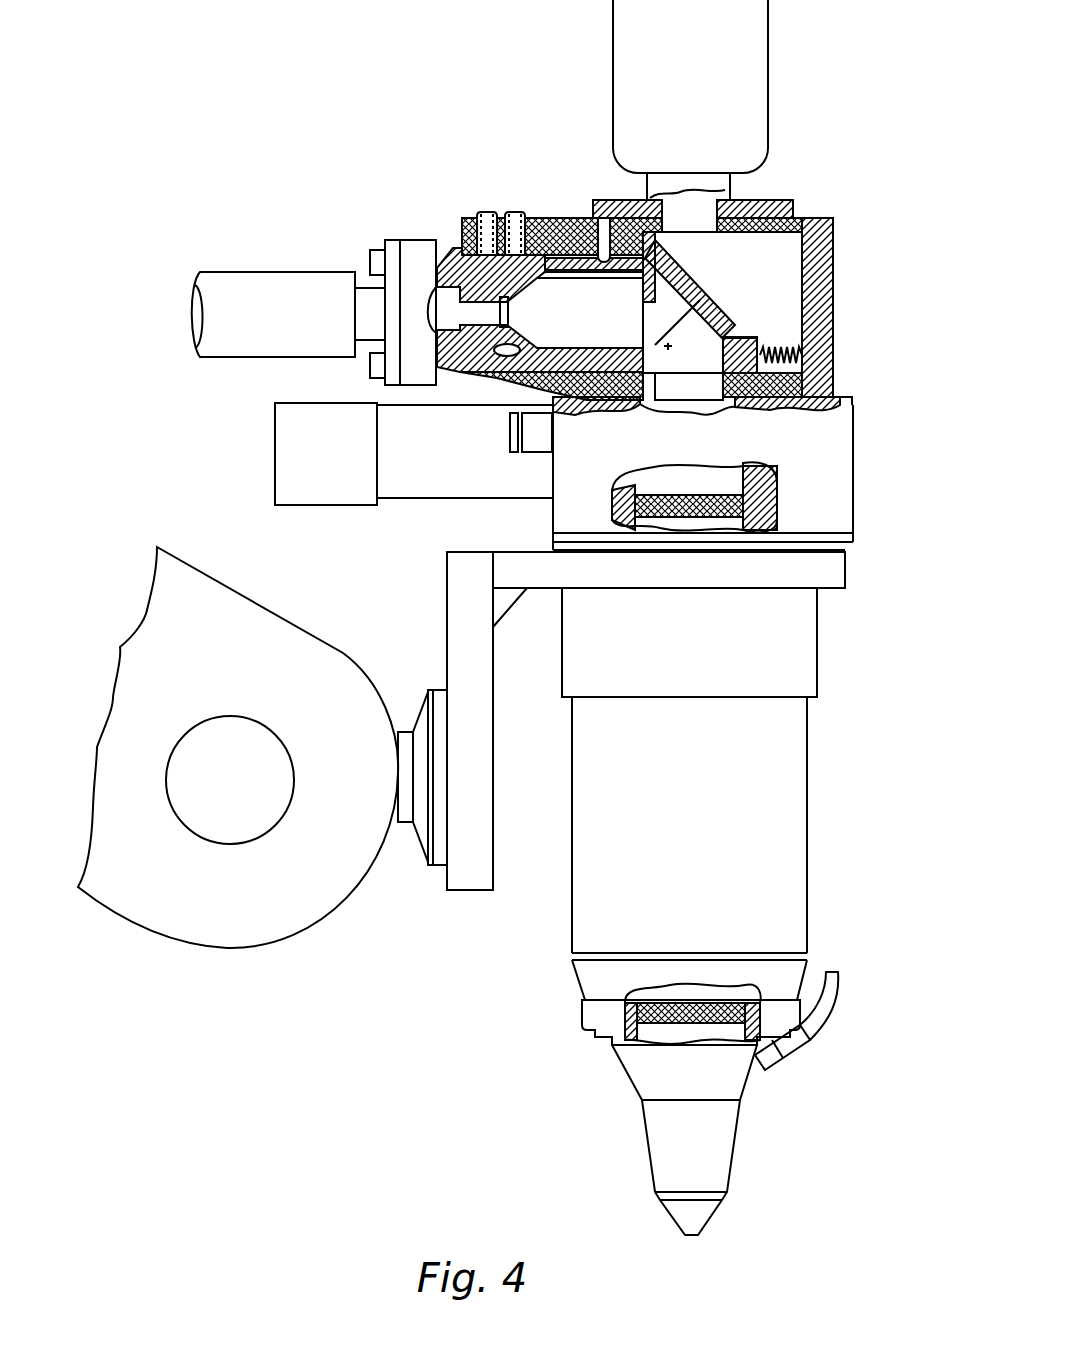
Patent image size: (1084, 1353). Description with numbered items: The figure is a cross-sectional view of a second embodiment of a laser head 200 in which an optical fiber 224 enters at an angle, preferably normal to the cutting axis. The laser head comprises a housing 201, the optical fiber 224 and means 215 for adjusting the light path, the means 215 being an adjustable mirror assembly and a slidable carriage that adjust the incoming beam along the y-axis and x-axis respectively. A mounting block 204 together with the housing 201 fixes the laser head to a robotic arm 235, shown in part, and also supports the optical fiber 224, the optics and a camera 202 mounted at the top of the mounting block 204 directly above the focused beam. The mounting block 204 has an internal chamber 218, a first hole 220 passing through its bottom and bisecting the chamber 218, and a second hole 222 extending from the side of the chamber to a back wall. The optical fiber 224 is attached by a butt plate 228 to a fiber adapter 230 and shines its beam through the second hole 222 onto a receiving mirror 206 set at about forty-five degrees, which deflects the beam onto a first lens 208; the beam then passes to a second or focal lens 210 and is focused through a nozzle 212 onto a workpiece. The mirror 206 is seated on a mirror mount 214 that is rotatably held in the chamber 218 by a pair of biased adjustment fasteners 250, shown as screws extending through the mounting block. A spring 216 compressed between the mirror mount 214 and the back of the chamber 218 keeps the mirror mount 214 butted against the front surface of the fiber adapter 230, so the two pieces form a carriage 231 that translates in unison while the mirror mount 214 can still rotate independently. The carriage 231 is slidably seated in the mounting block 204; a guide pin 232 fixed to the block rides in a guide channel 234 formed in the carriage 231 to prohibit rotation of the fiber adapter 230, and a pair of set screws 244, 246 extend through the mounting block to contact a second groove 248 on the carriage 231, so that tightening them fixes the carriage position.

The laser head 200 is at (342, 133).
The means for adjusting 215 is at (453, 113).
The camera 202 is at (600, 90).
The guide pin 232 is at (588, 216).
The second hole 222 is at (552, 218).
The set screw 246 is at (496, 214).
The set screw 244 is at (479, 213).
The second groove 248 is at (467, 232).
The butt plate 228 is at (395, 240).
The optical fiber 224 is at (360, 265).
The carriage 231 is at (700, 218).
The mounting block 204 is at (777, 257).
The internal chamber 218 is at (833, 240).
The receiving mirror 206 is at (742, 300).
The spring 216 is at (833, 343).
The mirror mount 214 is at (833, 360).
The first hole 220 is at (850, 402).
The first lens 208 is at (780, 488).
The guide channel 234 is at (502, 380).
The fiber adapter 230 is at (588, 263).
The biased adjustment fastener 250 is at (653, 413).
The robot or robotic arm 235 is at (465, 652).
The housing 201 is at (820, 667).
The second or focal lens 210 is at (750, 993).
The nozzle 212 is at (723, 1147).